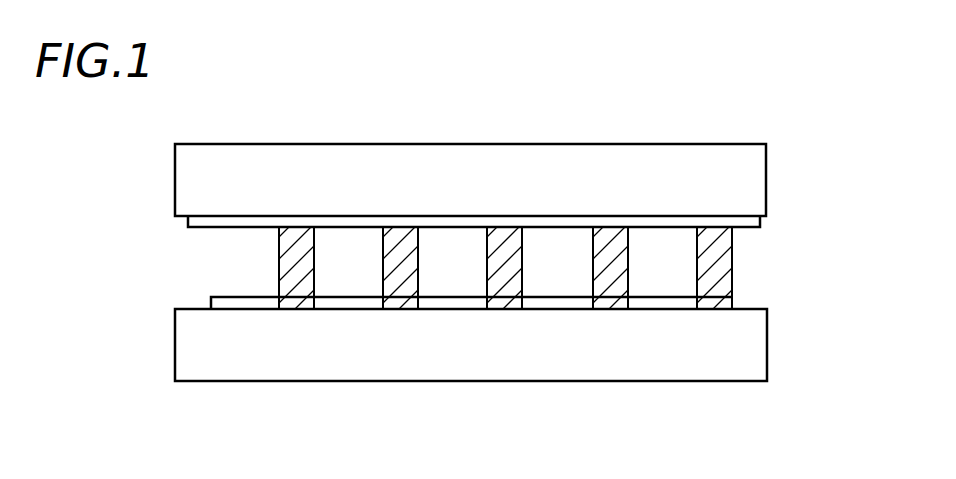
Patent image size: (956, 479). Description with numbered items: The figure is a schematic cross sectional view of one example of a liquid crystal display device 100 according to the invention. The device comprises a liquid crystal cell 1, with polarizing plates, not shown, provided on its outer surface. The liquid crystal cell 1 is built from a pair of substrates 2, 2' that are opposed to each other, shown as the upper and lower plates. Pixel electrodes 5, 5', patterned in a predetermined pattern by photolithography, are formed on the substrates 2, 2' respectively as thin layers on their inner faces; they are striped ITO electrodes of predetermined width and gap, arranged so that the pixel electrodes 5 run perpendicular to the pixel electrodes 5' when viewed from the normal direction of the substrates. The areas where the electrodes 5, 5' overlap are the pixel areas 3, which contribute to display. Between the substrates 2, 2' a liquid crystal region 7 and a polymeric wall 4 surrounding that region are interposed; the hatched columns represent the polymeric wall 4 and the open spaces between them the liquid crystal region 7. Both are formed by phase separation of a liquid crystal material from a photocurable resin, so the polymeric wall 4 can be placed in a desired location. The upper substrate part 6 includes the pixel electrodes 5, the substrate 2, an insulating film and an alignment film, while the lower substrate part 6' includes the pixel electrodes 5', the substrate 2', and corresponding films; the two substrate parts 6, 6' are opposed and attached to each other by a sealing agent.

The liquid crystal display device 100 is at (732, 95).
The liquid crystal cell 1 is at (585, 115).
The substrate 2 is at (506, 180).
The substrate 2' is at (510, 345).
The pixel area 3 is at (348, 207).
The polymeric wall 4 is at (715, 273).
The pixel electrode 5 is at (512, 219).
The pixel electrode 5' is at (471, 372).
The substrate part 6 is at (467, 190).
The substrate part 6' is at (471, 372).
The liquid crystal region 7 is at (365, 238).